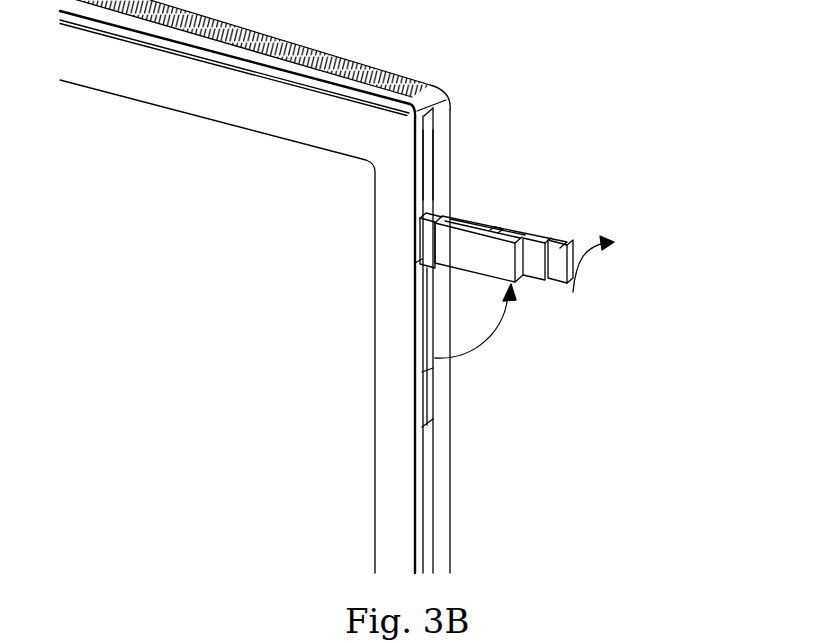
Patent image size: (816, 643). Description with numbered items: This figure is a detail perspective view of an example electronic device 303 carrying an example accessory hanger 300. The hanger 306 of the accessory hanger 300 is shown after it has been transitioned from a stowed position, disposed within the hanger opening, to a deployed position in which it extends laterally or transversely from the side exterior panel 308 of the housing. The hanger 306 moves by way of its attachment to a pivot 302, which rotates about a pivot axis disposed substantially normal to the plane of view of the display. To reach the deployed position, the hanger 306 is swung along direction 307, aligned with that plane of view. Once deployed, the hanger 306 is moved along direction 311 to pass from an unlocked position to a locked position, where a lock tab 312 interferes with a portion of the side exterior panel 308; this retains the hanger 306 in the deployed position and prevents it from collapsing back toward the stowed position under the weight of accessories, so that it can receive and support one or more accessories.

The accessory hanger 300 is at (557, 378).
The pivot 302 is at (426, 200).
The electronic device 303 is at (660, 58).
The hanger 306 is at (468, 222).
The direction 307 is at (470, 347).
The side exterior panel 308 is at (425, 167).
The direction 311 is at (596, 262).
The lock tab 312 is at (420, 243).